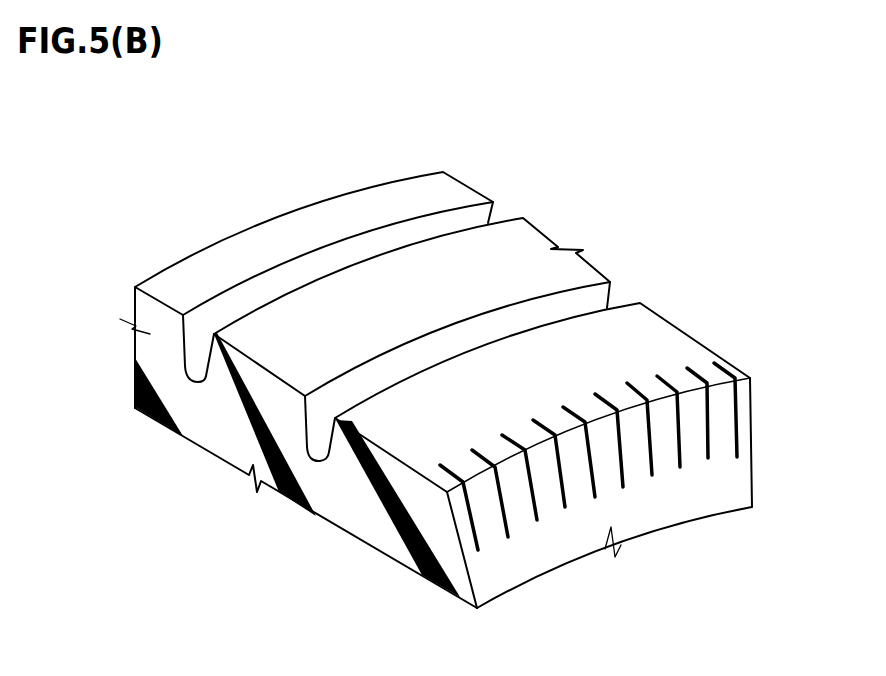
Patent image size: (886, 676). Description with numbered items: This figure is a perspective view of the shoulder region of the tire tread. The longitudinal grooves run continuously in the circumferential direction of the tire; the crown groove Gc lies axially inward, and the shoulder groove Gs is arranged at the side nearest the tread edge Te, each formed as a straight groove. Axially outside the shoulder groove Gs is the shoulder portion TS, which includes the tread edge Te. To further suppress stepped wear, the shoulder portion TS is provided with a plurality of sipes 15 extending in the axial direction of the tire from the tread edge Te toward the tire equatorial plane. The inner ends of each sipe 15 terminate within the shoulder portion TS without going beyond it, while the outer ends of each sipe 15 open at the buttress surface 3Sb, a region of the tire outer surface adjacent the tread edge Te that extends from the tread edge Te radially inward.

The buttress surface 3Sb is at (543, 493).
The crown groove Gc is at (302, 275).
The shoulder groove Gs is at (422, 360).
The shoulder portion TS is at (628, 345).
The tread edge Te is at (710, 380).
The sipe 15 is at (620, 455).